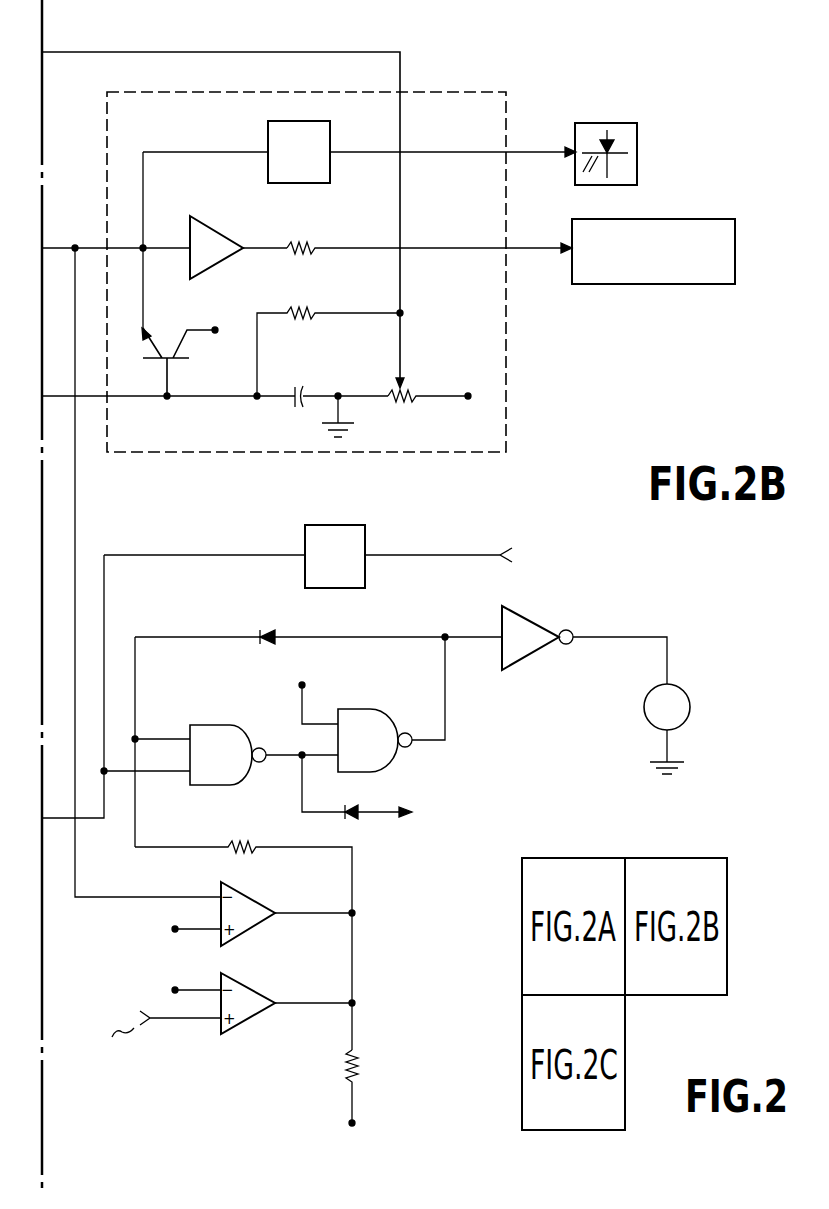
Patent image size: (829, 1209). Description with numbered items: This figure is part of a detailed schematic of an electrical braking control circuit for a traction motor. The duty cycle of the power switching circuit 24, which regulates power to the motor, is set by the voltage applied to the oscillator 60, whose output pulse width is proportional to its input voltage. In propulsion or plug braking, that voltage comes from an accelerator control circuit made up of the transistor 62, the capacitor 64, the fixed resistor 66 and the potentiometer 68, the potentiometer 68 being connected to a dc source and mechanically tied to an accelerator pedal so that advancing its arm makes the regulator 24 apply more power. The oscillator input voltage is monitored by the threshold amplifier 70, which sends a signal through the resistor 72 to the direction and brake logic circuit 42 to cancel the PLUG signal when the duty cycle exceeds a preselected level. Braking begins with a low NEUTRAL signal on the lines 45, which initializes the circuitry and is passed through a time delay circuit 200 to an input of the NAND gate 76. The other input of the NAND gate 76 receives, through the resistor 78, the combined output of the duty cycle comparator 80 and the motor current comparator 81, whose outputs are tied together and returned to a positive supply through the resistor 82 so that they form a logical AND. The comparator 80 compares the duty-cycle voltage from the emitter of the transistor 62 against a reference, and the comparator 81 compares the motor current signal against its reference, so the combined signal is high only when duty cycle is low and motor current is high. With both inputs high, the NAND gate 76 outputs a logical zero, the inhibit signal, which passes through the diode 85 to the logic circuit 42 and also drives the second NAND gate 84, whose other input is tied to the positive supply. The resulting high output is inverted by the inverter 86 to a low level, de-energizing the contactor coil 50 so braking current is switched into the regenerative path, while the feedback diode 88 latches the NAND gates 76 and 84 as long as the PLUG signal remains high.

The power switching circuit 24 is at (637, 120).
The direction and brake logic circuit 42 is at (705, 219).
The oscillator 60 is at (338, 137).
The transistor 62 is at (167, 342).
The capacitor 64 is at (297, 386).
The fixed resistor 66 is at (318, 310).
The potentiometer 68 is at (406, 410).
The threshold amplifier 70 is at (219, 225).
The resistor 72 is at (316, 239).
The time delay 200 is at (364, 527).
The lines 45 is at (468, 540).
The feedback diode 88 is at (268, 630).
The inverter 86 is at (540, 624).
The contactor coil 50 is at (687, 701).
The NAND gate 76 is at (228, 725).
The second NAND gate 84 is at (386, 715).
The diode 85 is at (358, 820).
The resistor 78 is at (244, 838).
The duty cycle comparator 80 is at (258, 928).
The motor current comparator 81 is at (258, 1022).
The resistor 82 is at (373, 1102).